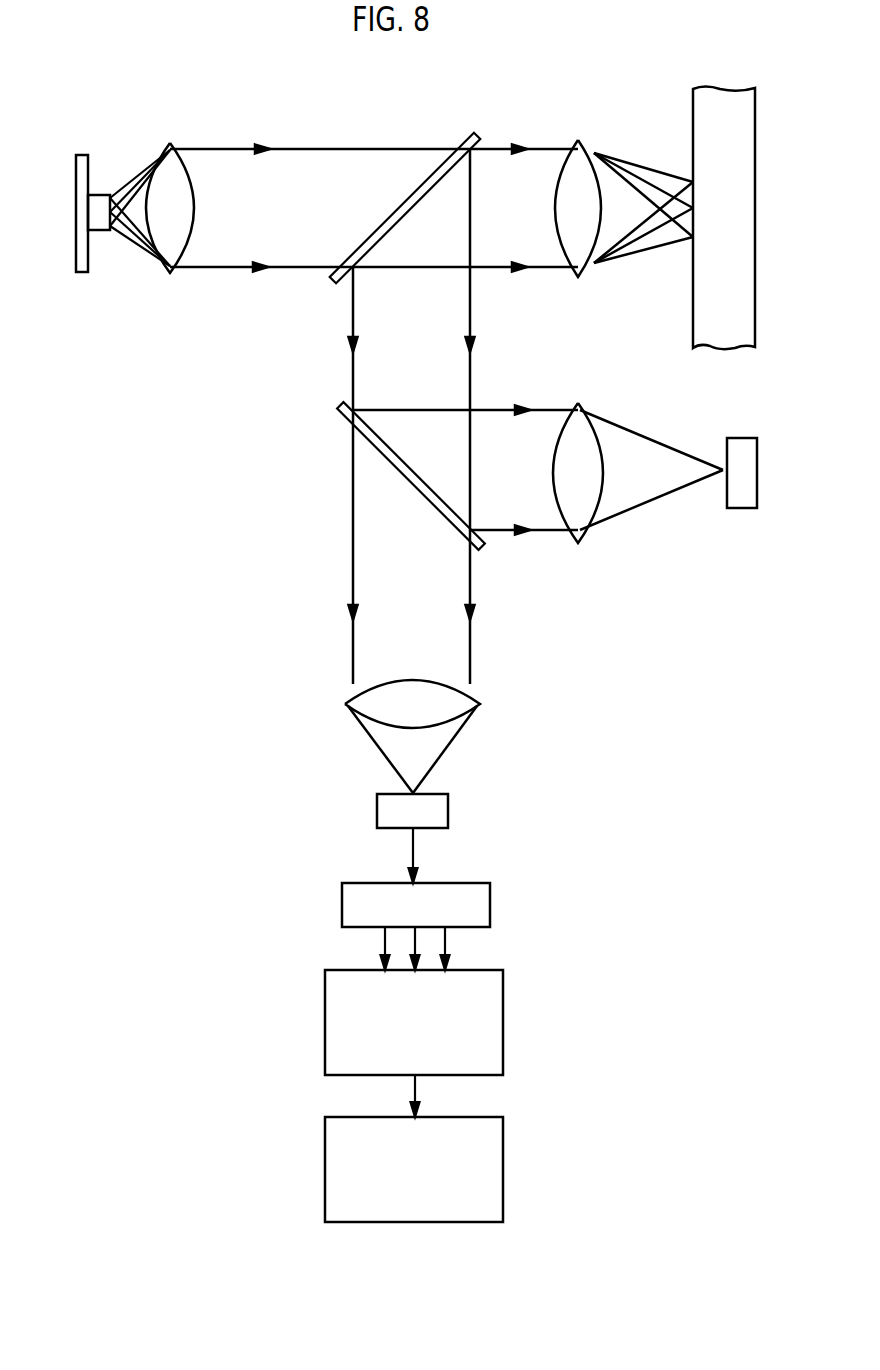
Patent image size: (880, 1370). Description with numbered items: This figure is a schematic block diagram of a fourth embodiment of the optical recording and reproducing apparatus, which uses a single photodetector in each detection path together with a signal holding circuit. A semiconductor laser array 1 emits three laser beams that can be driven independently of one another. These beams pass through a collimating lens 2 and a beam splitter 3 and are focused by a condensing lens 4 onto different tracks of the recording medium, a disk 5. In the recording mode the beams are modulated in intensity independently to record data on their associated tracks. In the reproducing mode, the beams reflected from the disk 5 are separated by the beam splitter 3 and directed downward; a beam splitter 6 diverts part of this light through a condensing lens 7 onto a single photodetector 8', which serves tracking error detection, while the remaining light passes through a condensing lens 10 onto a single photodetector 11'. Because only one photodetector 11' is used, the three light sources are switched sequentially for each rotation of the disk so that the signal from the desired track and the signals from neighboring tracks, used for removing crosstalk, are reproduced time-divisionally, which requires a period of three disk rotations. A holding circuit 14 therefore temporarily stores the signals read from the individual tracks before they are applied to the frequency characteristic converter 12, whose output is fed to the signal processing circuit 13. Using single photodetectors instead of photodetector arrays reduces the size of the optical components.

The semiconductor laser array 1 is at (120, 171).
The collimating lens 2 is at (175, 172).
The beam splitter 3 is at (472, 128).
The condensing lens 4 is at (580, 140).
The recording medium (disk) 5 is at (693, 101).
The beam splitter 6 is at (342, 402).
The condensing lens 7 is at (580, 406).
The single photodetector 8' is at (742, 450).
The condensing lens 10 is at (481, 704).
The single photodetector 11' is at (443, 811).
The holding circuit 14 is at (490, 913).
The frequency characteristic converter 12 is at (503, 1041).
The signal processing circuit 13 is at (503, 1187).